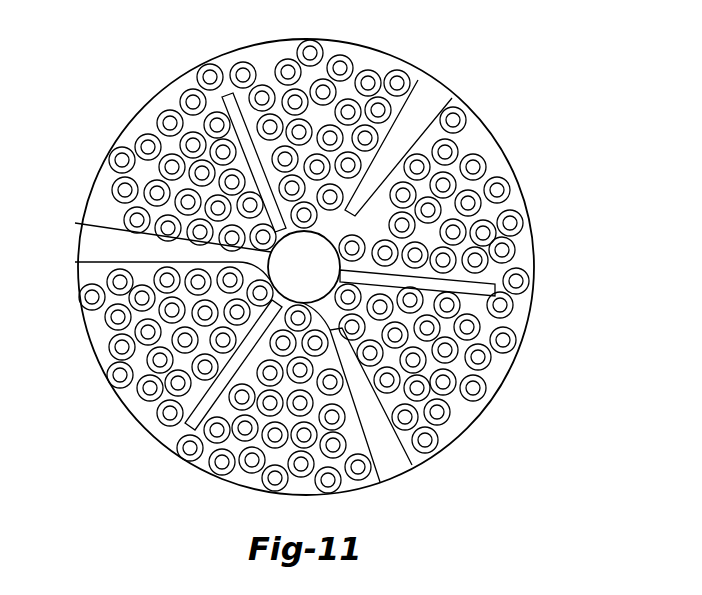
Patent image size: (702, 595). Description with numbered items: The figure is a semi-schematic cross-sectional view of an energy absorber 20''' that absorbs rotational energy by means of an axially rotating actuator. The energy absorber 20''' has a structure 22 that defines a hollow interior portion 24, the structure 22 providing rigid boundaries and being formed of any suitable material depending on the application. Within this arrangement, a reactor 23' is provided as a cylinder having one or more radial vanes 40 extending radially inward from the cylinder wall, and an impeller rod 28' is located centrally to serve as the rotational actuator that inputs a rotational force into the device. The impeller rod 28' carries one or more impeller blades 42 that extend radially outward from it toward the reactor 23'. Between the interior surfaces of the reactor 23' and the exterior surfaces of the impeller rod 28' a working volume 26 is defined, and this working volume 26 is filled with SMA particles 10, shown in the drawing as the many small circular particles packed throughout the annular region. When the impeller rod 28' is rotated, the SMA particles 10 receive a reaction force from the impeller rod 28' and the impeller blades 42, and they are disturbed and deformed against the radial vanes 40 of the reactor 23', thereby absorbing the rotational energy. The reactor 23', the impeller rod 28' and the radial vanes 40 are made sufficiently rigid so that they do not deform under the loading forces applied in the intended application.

The energy absorber 20''' is at (340, 249).
The SMA particles 10 is at (340, 256).
The structure 22 is at (531, 172).
The reactor 23' is at (554, 281).
The hollow interior portion 24 is at (112, 223).
The working volume 26 is at (270, 72).
The impeller rod 28' is at (391, 281).
The radial vanes 40 is at (338, 244).
The impeller blades 42 is at (207, 70).